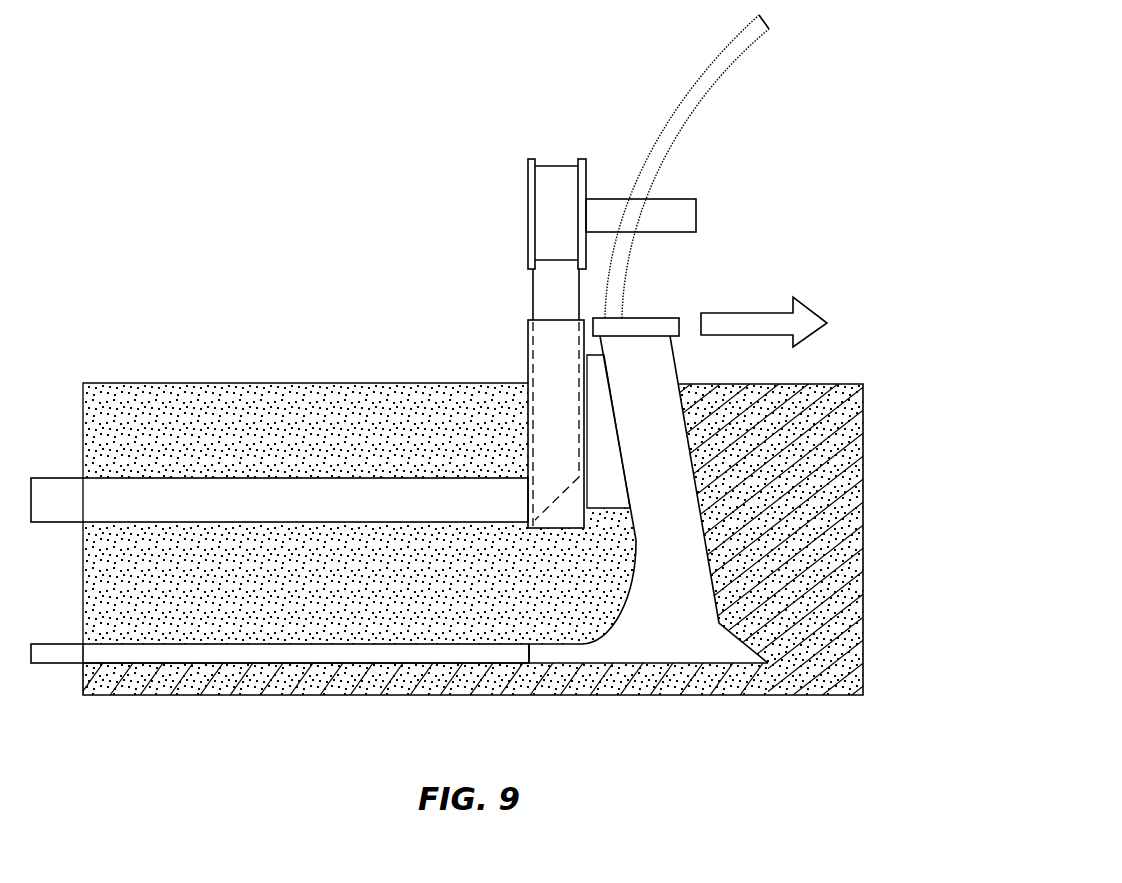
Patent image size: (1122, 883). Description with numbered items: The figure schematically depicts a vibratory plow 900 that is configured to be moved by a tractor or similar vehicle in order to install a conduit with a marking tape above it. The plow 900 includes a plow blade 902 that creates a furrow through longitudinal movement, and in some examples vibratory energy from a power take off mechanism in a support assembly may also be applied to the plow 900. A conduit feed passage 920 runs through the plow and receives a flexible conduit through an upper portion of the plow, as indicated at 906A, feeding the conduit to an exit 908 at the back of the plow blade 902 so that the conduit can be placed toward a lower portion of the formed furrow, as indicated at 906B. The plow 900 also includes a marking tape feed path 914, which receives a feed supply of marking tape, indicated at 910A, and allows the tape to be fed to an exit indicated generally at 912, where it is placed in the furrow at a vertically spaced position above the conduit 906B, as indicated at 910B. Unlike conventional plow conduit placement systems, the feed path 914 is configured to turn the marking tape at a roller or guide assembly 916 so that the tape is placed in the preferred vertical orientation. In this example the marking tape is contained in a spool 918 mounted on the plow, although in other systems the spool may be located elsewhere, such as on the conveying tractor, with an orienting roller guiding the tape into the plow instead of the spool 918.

The plow 900 is at (382, 118).
The plow blade 902 is at (690, 550).
The flexible conduit (upper portion) 906A is at (620, 278).
The conduit (placed in furrow) 906B is at (388, 652).
The exit 908 is at (514, 678).
The marking tape feed supply 910A is at (533, 297).
The marking tape (placed in furrow) 910B is at (267, 477).
The marking tape exit 912 is at (528, 497).
The marking tape feed path 914 is at (528, 355).
The roller or guide assembly 916 is at (553, 505).
The spool 918 is at (528, 195).
The conduit feed passage 920 is at (543, 655).